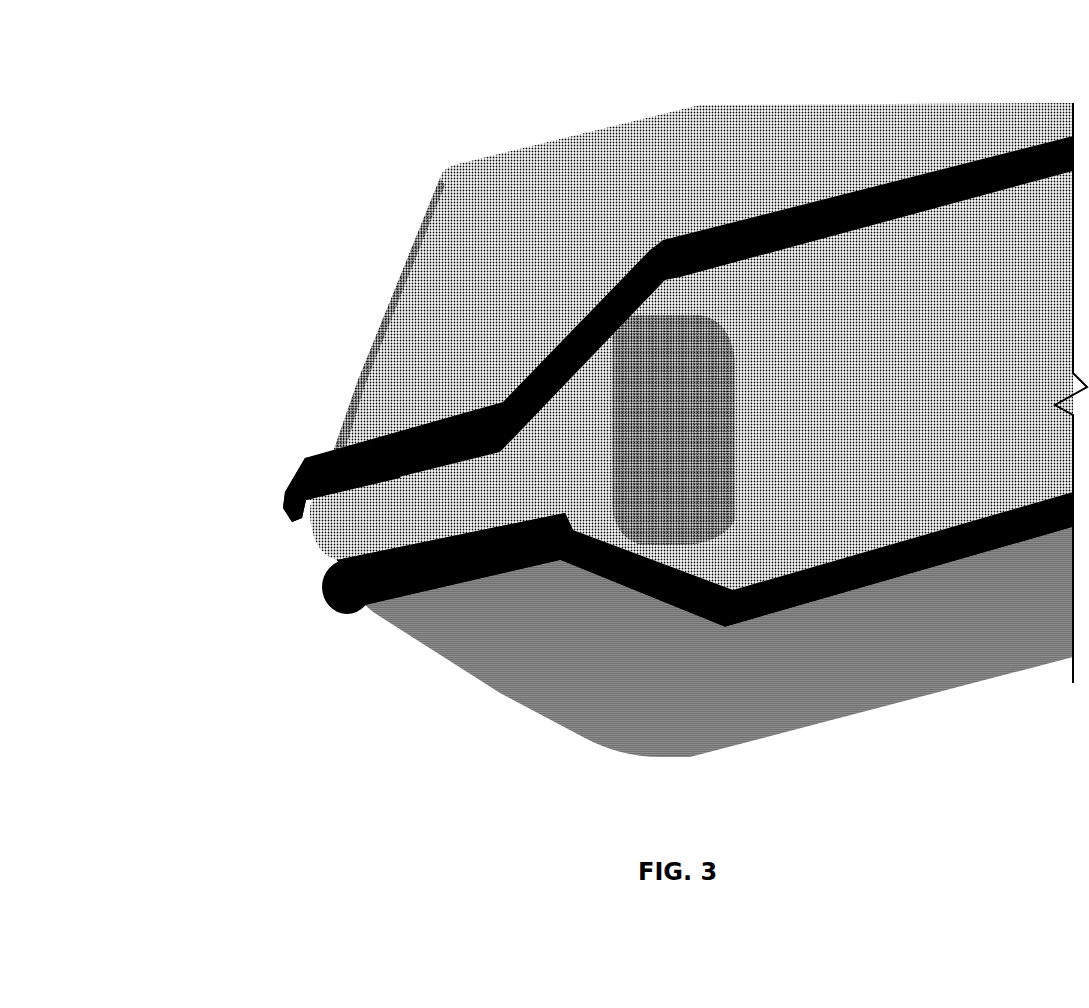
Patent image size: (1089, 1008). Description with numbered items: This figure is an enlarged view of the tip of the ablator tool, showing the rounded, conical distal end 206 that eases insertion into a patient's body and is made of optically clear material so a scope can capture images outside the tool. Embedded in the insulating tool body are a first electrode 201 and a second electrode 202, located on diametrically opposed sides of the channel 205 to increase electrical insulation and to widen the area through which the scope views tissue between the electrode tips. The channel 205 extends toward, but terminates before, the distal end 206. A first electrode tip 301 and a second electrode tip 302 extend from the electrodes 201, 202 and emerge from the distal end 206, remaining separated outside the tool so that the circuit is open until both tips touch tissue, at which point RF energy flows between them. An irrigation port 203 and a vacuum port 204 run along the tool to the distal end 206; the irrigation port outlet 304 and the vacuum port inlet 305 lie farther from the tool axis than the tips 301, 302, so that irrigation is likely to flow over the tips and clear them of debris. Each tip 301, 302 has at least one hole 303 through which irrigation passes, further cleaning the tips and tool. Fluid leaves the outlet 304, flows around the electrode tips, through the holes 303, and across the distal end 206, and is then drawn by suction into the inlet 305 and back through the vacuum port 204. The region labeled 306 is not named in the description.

The first electrode 201 is at (763, 607).
The second electrode 202 is at (765, 235).
The irrigation port 203 is at (643, 205).
The vacuum port 204 is at (973, 600).
The channel 205 is at (942, 360).
The distal end 206 is at (325, 543).
The first electrode tip 301 is at (330, 587).
The second electrode tip 302 is at (283, 515).
The hole 303 is at (370, 598).
The irrigation port outlet 304 is at (395, 307).
The vacuum port inlet 305 is at (600, 683).
The cavity interior 306 is at (672, 455).